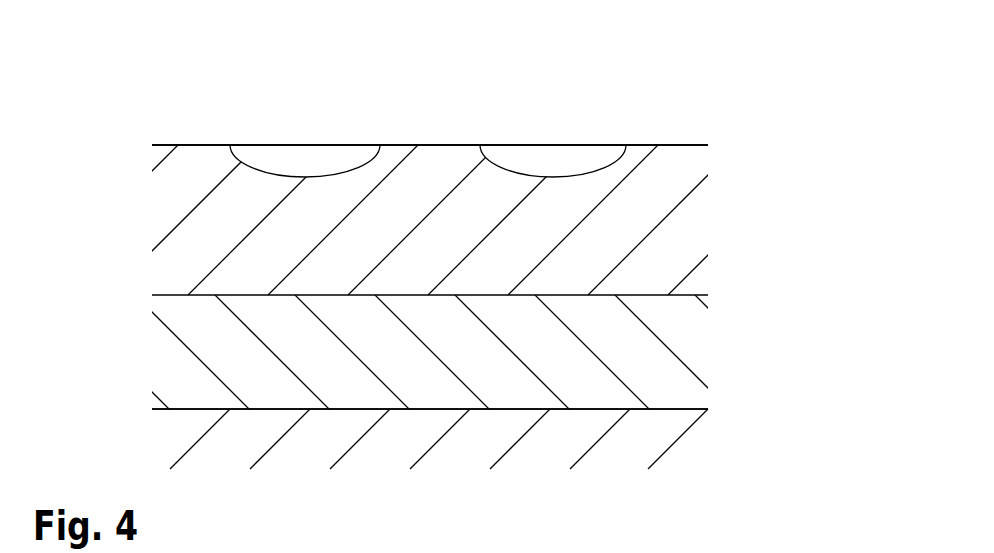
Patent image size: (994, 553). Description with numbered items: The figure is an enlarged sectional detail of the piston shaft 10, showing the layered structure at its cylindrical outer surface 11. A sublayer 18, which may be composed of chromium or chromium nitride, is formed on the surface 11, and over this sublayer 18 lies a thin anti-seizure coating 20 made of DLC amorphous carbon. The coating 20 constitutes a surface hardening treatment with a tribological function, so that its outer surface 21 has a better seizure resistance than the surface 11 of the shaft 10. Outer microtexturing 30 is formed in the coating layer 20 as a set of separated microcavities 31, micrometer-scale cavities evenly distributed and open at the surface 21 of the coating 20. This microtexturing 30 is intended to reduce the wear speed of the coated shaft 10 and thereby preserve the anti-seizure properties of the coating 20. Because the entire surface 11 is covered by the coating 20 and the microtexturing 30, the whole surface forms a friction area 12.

The piston shaft 10 is at (157, 445).
The cylindrical outer surface 11 is at (283, 407).
The friction area 12 is at (188, 105).
The sublayer 18 is at (717, 345).
The anti-seizure coating 20 is at (723, 230).
The outer surface of the coating 21 is at (428, 144).
The microtexturing 30 is at (617, 98).
The microcavities 31 is at (307, 143).